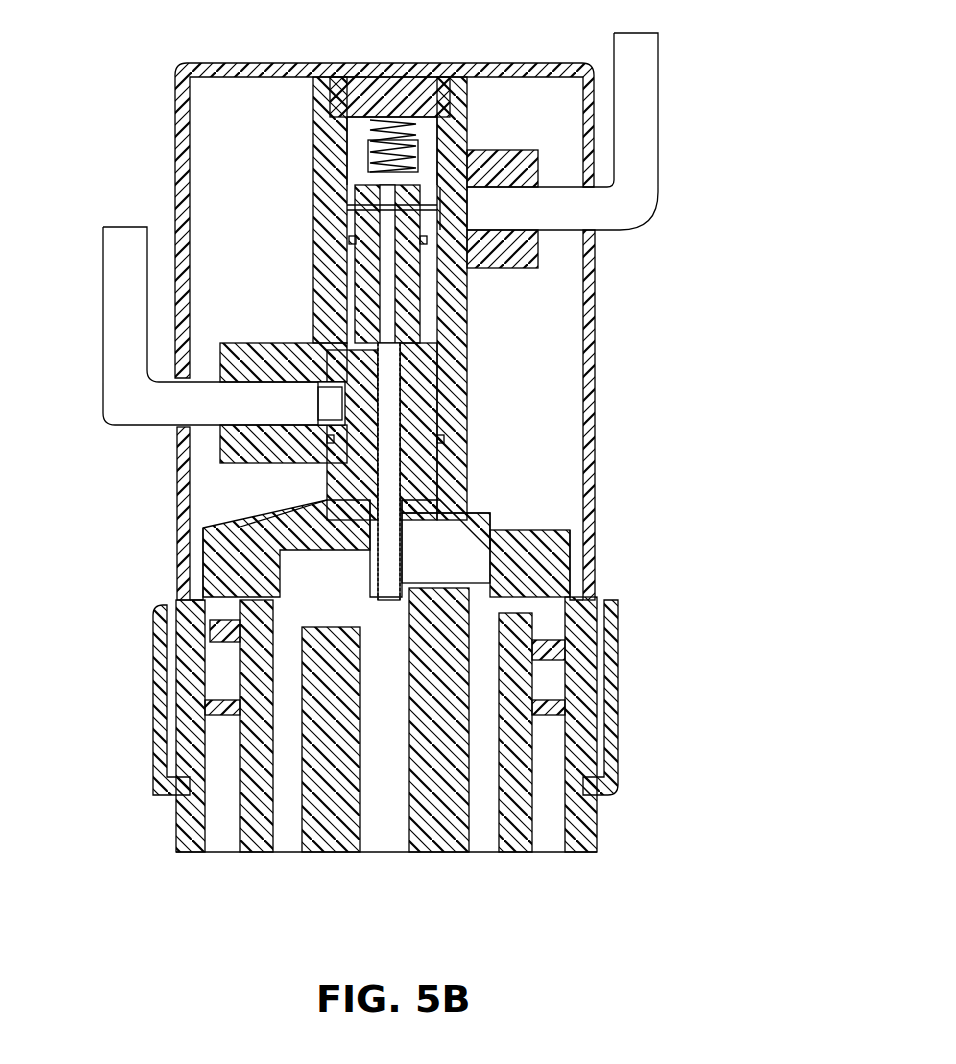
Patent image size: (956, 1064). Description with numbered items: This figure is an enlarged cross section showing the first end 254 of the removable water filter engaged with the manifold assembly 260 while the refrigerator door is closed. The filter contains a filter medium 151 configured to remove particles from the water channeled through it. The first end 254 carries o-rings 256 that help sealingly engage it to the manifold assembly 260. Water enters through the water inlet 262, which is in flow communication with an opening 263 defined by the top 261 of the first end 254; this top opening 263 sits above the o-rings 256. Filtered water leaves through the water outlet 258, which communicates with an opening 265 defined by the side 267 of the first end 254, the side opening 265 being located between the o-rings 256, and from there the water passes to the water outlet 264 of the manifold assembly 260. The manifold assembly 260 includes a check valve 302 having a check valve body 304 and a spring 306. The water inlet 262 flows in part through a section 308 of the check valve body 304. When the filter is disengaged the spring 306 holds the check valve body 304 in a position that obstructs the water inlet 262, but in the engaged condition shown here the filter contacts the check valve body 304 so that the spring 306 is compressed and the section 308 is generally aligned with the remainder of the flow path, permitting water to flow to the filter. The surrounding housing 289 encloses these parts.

The filter medium 151 is at (440, 830).
The first end 254 is at (430, 406).
The o-rings 256 is at (520, 490).
The water outlet 258 is at (333, 463).
The manifold assembly 260 is at (453, 123).
The top 261 is at (420, 360).
The water inlet 262 is at (618, 204).
The opening 263 is at (360, 356).
The water outlet 264 is at (108, 386).
The opening 265 is at (333, 400).
The side 267 is at (330, 427).
The housing 289 is at (597, 437).
The check valve 302 is at (340, 93).
The check valve body 304 is at (423, 123).
The spring 306 is at (370, 140).
The section 308 is at (383, 290).